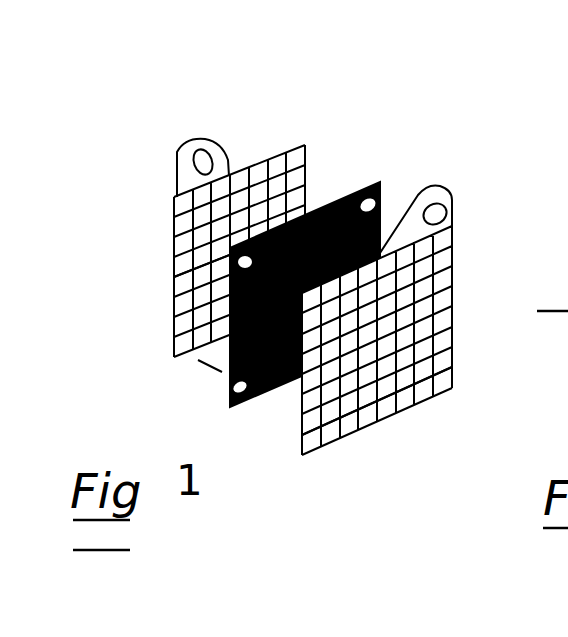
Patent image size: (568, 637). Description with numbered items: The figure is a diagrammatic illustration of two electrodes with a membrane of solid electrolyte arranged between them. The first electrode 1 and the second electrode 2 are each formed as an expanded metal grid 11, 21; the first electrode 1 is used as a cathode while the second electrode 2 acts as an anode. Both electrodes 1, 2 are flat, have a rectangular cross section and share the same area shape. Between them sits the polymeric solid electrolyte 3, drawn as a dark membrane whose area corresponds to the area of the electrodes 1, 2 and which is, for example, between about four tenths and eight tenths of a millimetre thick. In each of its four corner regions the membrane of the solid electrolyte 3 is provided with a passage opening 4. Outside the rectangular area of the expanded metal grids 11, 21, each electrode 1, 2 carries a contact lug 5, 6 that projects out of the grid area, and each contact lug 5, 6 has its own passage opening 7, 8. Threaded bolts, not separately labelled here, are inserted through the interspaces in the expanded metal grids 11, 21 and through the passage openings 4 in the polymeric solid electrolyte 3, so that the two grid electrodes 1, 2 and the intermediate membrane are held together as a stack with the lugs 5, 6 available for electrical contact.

The first electrode 1 is at (466, 256).
The second electrode 2 is at (327, 163).
The polymeric solid electrolyte 3 is at (393, 173).
The passage opening 4 is at (213, 267).
The contact lug 5 is at (422, 194).
The contact lug 6 is at (189, 147).
The passage opening 7 is at (452, 204).
The passage opening 8 is at (208, 156).
The expanded metal grid 11 is at (345, 420).
The expanded metal grid 21 is at (173, 230).